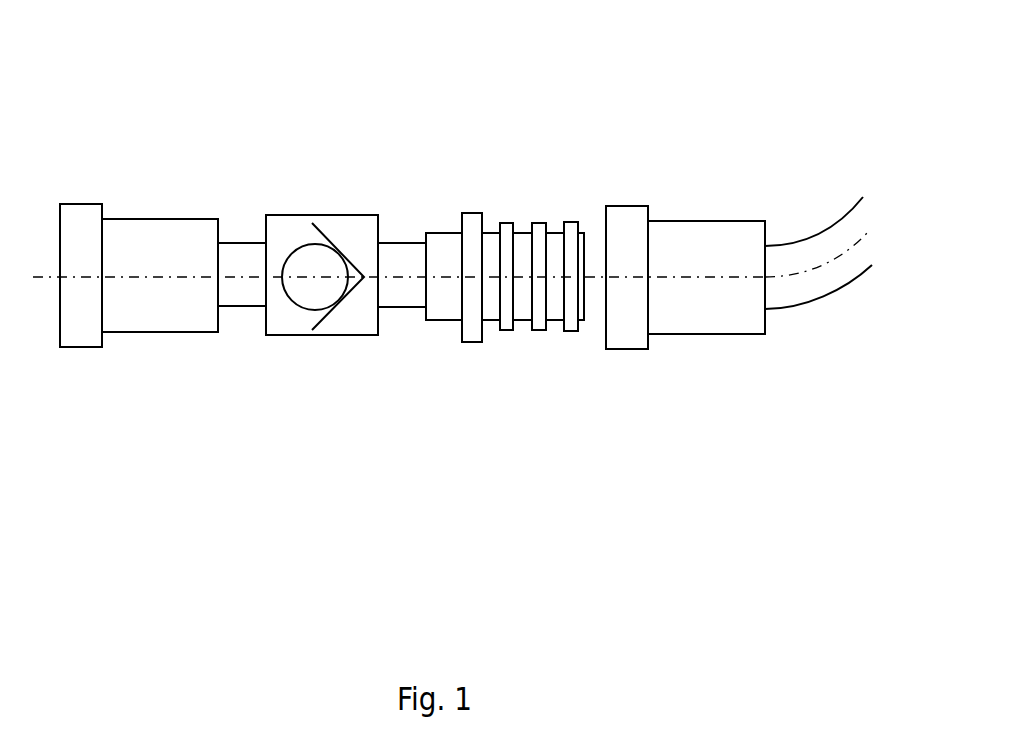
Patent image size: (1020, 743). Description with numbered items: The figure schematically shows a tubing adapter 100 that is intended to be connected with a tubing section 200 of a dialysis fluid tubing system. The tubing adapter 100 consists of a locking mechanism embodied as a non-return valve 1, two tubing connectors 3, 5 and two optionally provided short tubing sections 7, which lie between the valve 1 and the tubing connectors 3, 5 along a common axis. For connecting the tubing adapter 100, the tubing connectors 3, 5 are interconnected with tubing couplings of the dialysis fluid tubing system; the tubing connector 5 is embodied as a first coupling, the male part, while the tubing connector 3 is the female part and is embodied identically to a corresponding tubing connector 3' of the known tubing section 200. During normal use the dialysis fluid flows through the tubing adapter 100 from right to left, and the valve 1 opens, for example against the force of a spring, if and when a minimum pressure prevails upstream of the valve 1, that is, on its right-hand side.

The non-return valve 1 is at (328, 335).
The tubing connector 3 is at (135, 314).
The tubing connector 3' is at (685, 315).
The tubing connector 5 is at (472, 342).
The short tubing section 7 is at (249, 306).
The tubing adapter 100 is at (580, 178).
The tubing section 200 is at (725, 138).